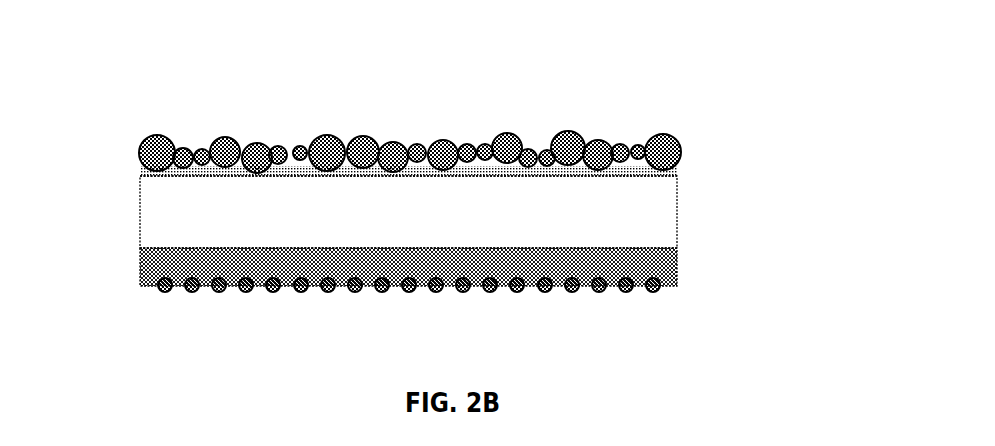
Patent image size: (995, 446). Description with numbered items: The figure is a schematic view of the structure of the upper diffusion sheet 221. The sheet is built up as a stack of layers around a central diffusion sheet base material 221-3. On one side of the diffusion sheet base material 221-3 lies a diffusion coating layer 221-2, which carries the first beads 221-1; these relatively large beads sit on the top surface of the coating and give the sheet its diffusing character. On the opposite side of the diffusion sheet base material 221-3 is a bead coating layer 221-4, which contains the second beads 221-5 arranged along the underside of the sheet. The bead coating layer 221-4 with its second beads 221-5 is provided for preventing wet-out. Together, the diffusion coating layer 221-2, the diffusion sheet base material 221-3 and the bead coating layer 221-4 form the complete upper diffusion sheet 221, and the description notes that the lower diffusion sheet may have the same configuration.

The upper diffusion sheet 221 is at (450, 225).
The first beads 221-1 is at (680, 133).
The diffusion coating layer 221-2 is at (677, 172).
The diffusion sheet base material 221-3 is at (677, 222).
The bead coating layer 221-4 is at (677, 268).
The second beads 221-5 is at (660, 297).